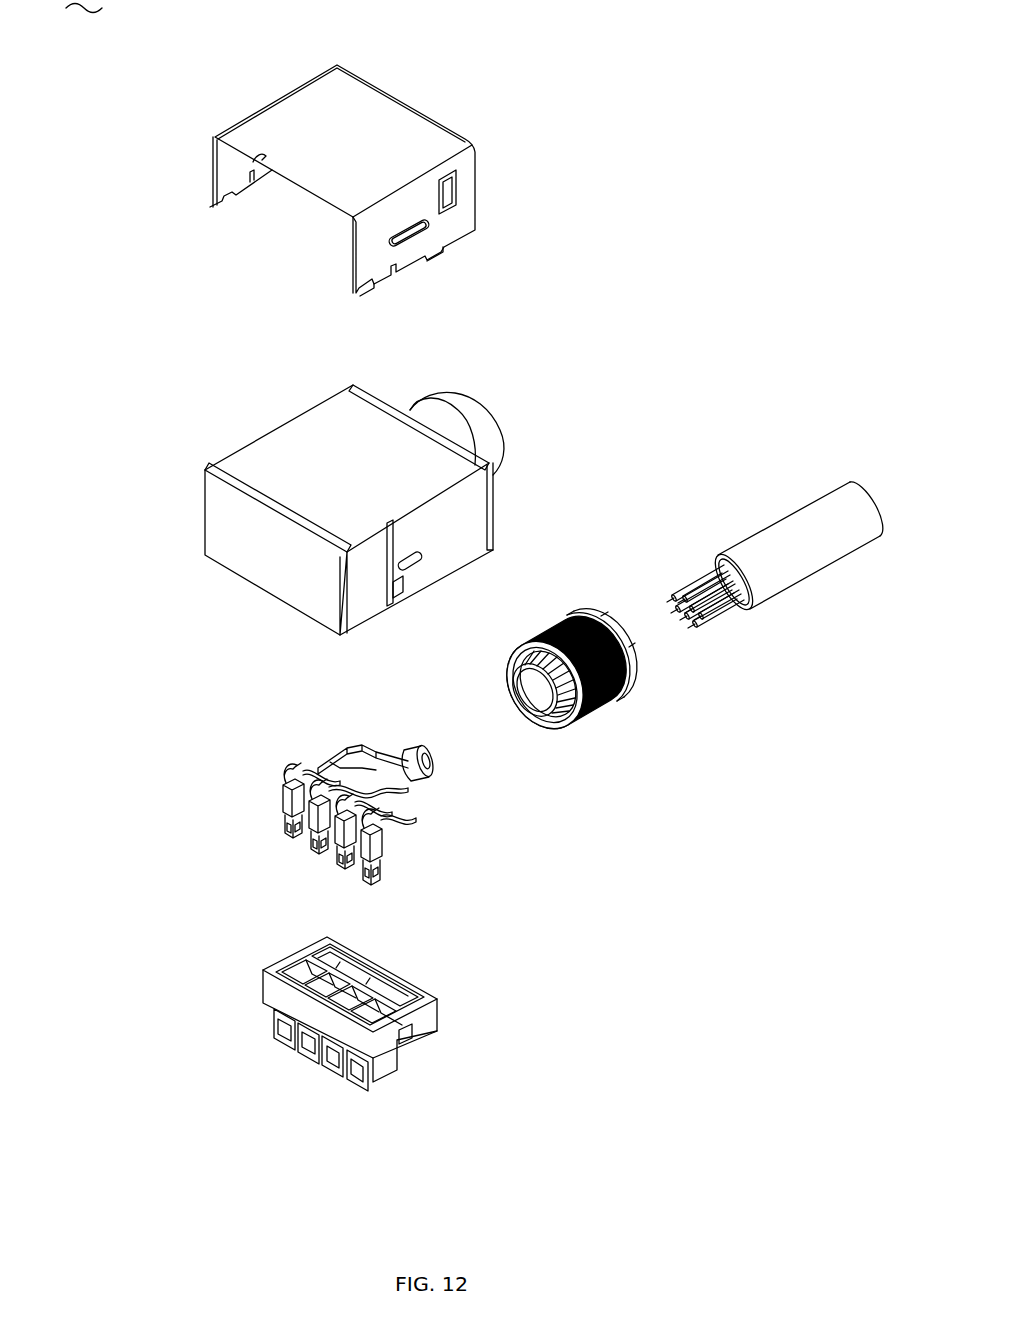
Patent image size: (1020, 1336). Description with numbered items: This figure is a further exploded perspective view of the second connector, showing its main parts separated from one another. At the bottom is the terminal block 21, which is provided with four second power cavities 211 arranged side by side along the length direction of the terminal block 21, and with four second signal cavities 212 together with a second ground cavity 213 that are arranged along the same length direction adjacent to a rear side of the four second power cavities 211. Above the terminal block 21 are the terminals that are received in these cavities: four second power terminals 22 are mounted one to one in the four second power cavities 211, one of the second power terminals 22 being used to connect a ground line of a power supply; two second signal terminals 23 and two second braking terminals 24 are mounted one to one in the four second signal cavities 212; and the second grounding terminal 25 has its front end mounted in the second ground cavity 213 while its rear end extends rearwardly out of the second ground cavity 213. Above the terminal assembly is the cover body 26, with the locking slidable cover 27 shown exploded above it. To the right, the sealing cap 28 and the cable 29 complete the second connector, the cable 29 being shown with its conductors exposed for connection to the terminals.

The terminal block 21 is at (320, 1017).
The second power cavities 211 is at (375, 1030).
The second signal cavities 212 is at (377, 975).
The second ground cavity 213 is at (337, 947).
The second power terminals 22 is at (280, 803).
The second signal terminals 23 is at (415, 842).
The second braking terminals 24 is at (397, 785).
The second grounding terminal 25 is at (375, 742).
The cover body 26 is at (250, 430).
The locking slidable cover 27 is at (440, 103).
The sealing cap 28 is at (625, 722).
The cable 29 is at (735, 527).